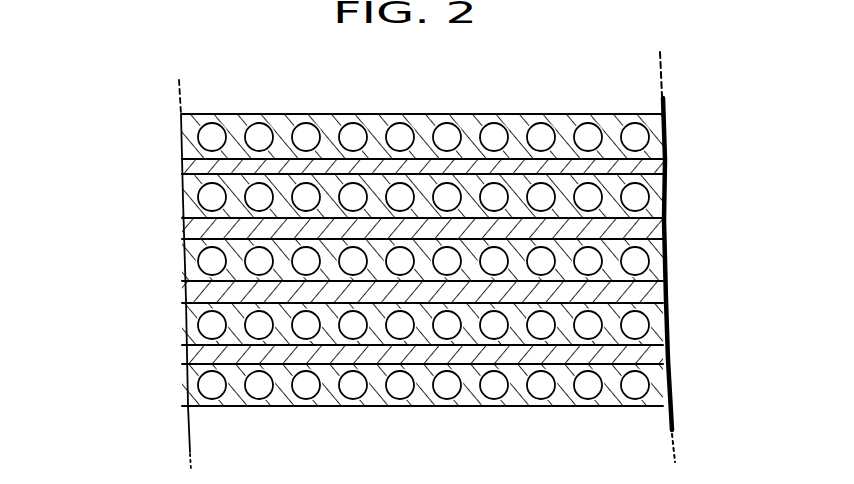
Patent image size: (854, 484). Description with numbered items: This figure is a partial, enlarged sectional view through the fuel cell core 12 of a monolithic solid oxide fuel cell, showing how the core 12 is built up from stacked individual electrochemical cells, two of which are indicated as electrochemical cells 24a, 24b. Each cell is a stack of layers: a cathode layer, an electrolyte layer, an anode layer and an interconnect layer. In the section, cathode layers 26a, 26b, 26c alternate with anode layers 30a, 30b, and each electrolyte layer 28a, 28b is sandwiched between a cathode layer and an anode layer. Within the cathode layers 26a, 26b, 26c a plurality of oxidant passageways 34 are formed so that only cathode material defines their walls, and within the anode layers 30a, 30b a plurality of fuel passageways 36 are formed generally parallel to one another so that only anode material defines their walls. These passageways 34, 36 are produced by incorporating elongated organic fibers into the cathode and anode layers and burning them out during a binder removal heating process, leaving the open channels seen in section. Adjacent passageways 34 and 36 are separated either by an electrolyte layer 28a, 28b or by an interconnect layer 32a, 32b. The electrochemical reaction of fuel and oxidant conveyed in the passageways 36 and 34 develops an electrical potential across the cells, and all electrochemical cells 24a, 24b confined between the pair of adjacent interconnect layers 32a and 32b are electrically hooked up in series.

The fuel cell core 12 is at (273, 102).
The electrochemical cell 24a is at (176, 284).
The electrochemical cell 24b is at (176, 282).
The cathode layer 26a is at (666, 387).
The cathode layer 26b is at (666, 262).
The cathode layer 26c is at (682, 131).
The electrolyte layer 28a is at (666, 355).
The electrolyte layer 28b is at (666, 228).
The anode layer 30a is at (666, 325).
The anode layer 30b is at (666, 198).
The interconnect layer 32a is at (666, 294).
The interconnect layer 32b is at (666, 166).
The oxidant passageways 34 is at (625, 388).
The fuel passageways 36 is at (533, 193).